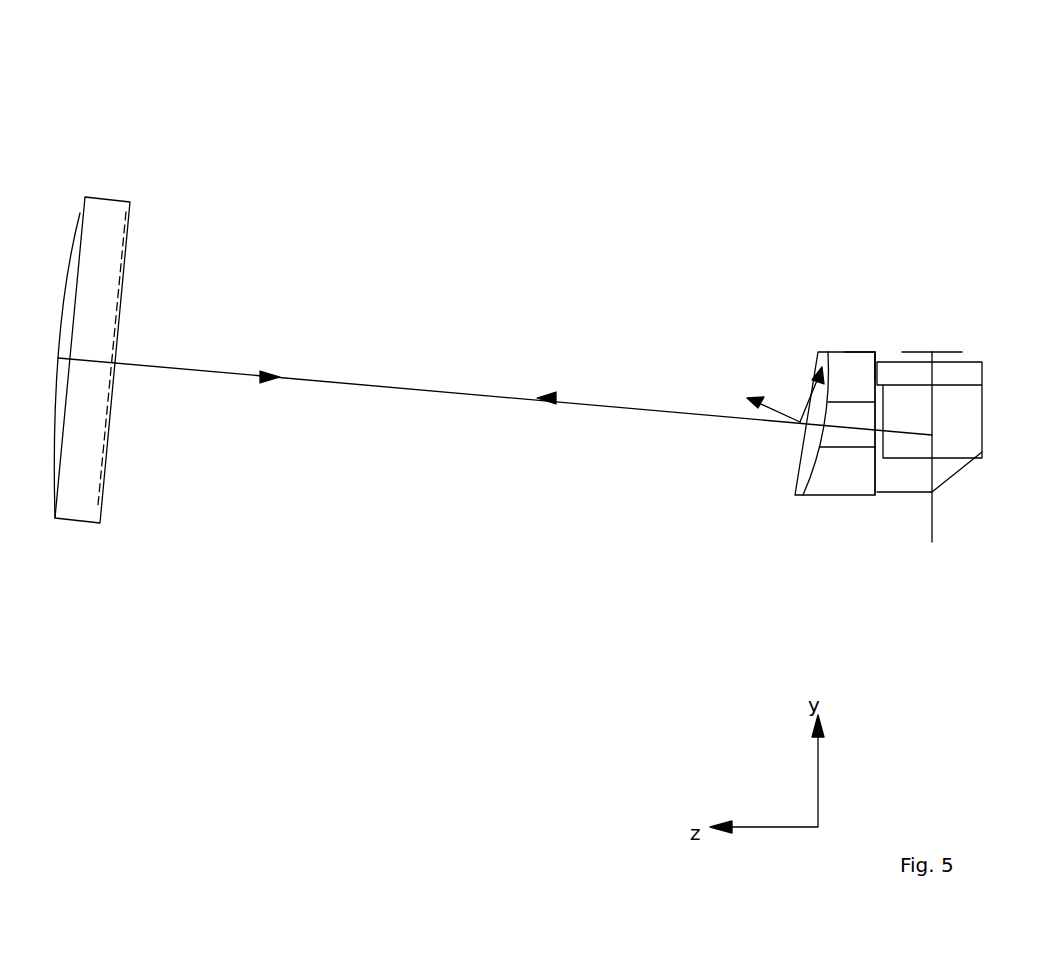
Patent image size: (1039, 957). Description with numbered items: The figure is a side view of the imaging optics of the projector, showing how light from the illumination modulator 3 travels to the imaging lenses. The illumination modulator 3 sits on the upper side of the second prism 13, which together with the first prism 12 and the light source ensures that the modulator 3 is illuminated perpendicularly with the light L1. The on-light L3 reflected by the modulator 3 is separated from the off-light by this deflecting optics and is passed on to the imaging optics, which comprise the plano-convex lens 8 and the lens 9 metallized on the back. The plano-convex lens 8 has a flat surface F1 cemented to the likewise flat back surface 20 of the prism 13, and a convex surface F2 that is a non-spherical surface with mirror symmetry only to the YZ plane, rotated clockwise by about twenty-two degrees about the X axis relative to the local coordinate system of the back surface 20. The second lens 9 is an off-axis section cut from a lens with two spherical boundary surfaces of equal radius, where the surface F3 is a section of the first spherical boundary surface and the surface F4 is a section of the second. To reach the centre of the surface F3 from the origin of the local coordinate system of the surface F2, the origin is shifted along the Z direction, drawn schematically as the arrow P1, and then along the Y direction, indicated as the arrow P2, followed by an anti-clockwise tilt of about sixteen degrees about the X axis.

The lens 9 is at (195, 288).
The surface F4 is at (77, 217).
The surface F3 is at (130, 252).
The on-light L3 is at (393, 387).
The plano-convex lens 8 is at (801, 437).
The convex surface F2 is at (793, 467).
The flat surface F1 is at (880, 477).
The second prism 13 is at (892, 357).
The back surface 20 is at (875, 370).
The arrow P1 is at (778, 407).
The arrow P2 is at (805, 392).
The illumination modulator 3 is at (922, 350).
The first prism 12 is at (907, 460).
The light L1 is at (935, 520).